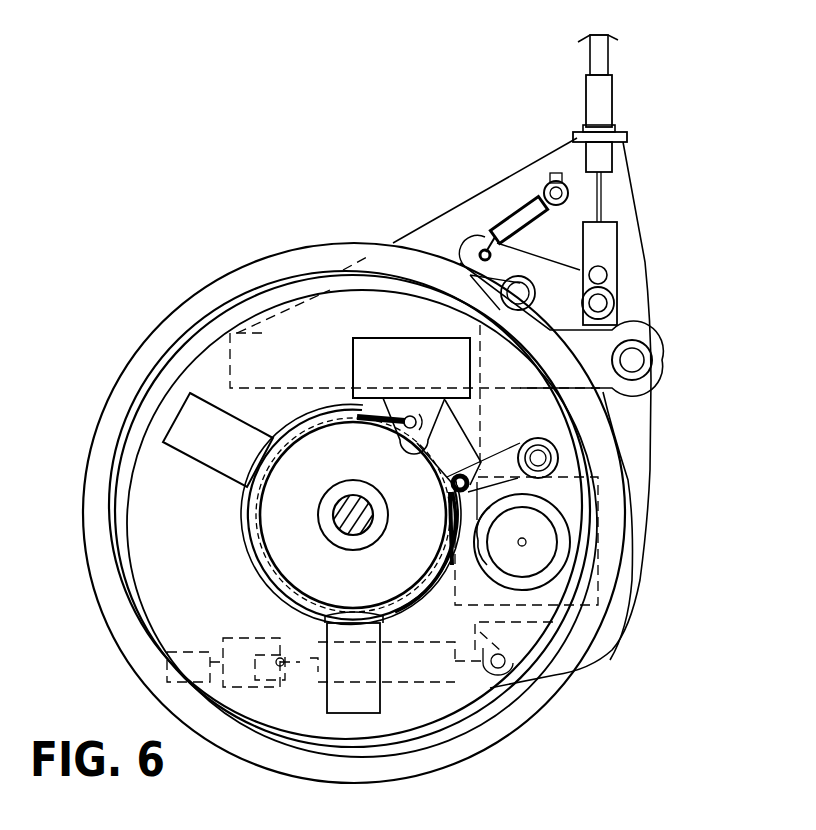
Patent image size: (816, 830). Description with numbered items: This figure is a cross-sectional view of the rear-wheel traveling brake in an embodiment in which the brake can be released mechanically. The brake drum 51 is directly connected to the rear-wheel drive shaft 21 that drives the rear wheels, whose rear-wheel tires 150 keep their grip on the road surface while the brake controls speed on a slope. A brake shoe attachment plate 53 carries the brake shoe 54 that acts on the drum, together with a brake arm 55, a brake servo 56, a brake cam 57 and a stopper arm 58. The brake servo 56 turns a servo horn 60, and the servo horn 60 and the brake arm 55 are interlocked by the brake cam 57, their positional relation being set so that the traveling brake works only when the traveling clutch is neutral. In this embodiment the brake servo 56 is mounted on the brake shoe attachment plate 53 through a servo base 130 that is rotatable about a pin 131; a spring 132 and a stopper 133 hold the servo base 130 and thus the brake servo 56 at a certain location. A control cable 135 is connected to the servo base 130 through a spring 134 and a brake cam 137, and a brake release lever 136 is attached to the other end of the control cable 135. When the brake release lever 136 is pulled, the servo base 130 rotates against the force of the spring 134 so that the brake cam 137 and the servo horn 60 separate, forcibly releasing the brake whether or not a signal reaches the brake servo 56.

The rear-wheel drive shaft 21 is at (328, 500).
The brake drum 51 is at (267, 572).
The brake shoe attachment plate 53 is at (430, 303).
The brake shoe 54 is at (243, 540).
The brake arm 55 is at (452, 478).
The brake servo 56 is at (562, 458).
The brake cam 57 is at (404, 418).
The stopper arm 58 is at (407, 337).
The servo horn 60 is at (552, 550).
The servo base 130 is at (652, 440).
The pin 131 is at (650, 340).
The spring 132 is at (430, 683).
The stopper 133 is at (520, 630).
The spring 134 is at (545, 226).
The control cable 135 is at (603, 187).
The brake release lever 136 is at (617, 287).
The brake cam 137 is at (583, 268).
The rear-wheel tires 150 is at (633, 535).